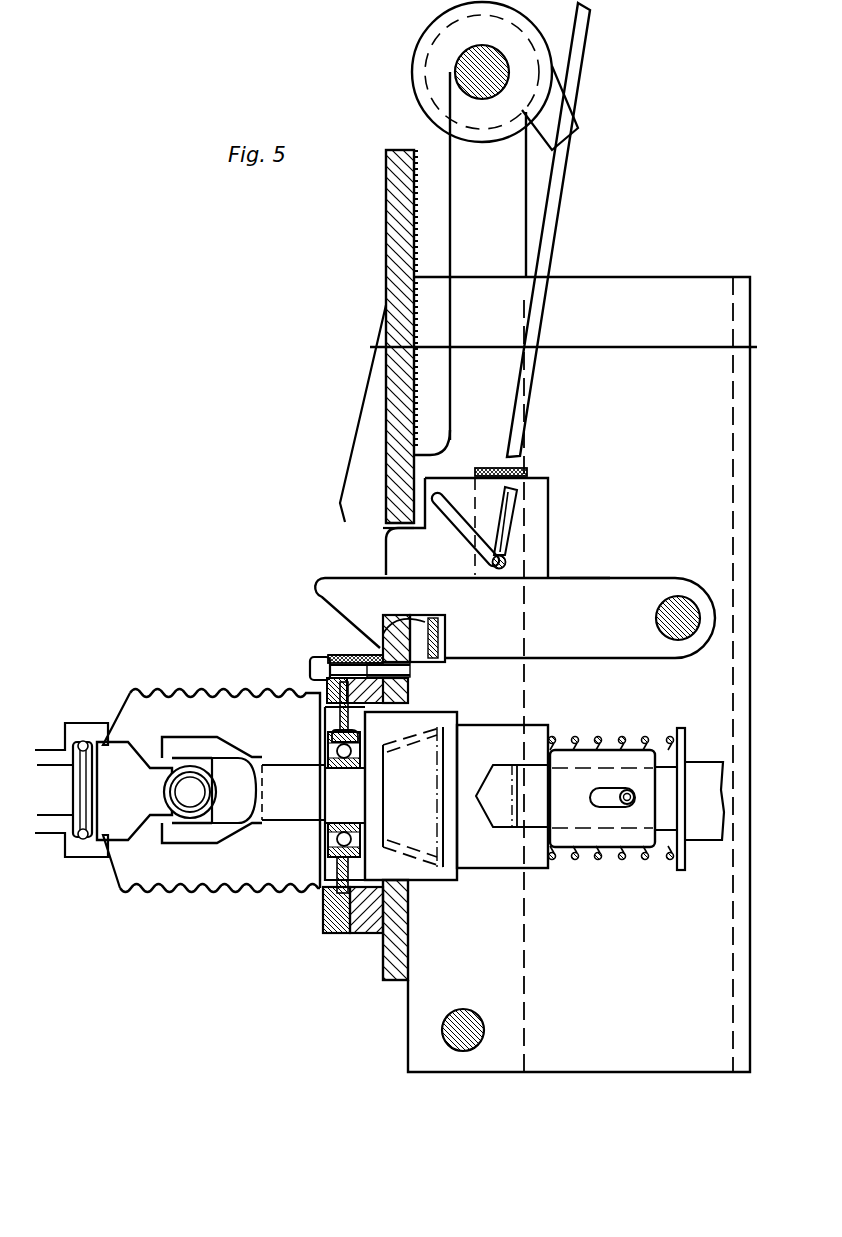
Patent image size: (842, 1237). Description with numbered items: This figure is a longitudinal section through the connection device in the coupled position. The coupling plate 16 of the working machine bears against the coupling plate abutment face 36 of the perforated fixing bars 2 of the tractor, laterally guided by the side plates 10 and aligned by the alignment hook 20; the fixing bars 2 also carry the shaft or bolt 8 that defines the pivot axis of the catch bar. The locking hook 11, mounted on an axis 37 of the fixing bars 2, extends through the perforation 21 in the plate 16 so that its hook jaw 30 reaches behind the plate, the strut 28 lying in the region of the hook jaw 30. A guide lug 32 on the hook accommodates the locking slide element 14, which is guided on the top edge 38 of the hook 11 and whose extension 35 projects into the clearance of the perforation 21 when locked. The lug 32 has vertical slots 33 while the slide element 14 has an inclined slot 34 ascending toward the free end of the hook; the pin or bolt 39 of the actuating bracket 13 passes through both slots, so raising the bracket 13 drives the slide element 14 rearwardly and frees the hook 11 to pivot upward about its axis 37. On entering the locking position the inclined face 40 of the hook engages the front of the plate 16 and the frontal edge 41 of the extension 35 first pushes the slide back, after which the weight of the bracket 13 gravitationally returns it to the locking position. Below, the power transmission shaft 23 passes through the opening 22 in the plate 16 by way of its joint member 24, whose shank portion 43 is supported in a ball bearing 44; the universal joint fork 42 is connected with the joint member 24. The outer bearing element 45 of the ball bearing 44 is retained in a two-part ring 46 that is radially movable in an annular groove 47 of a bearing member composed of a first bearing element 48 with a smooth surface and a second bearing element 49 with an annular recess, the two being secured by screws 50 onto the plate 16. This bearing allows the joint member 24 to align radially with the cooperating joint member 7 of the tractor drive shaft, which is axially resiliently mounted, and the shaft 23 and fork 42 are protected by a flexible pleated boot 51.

The perforated fixing bars 2 is at (683, 283).
The joint member 7 is at (520, 868).
The shaft or bolt 8 is at (468, 1010).
The side or guide plates 10 is at (372, 375).
The locking hook 11 is at (623, 602).
The actuating bracket 13 is at (583, 30).
The locking slide element 14 is at (540, 537).
The coupling plate 16 is at (400, 278).
The alignment hook 20 is at (430, 60).
The perforations 21 is at (383, 528).
The opening 22 is at (362, 930).
The power transmission shaft 23 is at (43, 750).
The joint member 24 is at (328, 896).
The strut 28 is at (433, 617).
The hook jaw 30 is at (365, 642).
The guide lug 32 is at (496, 467).
The vertical slots 33 is at (495, 502).
The inclined slot 34 is at (441, 510).
The extension 35 is at (402, 560).
The coupling plate abutment face 36 is at (408, 1025).
The axis 37 is at (678, 600).
The top edge 38 is at (586, 578).
The pin or bolt 39 is at (504, 556).
The inclined face 40 is at (320, 598).
The frontal edge 41 is at (386, 540).
The universal joint fork 42 is at (280, 827).
The shank portion 43 is at (325, 812).
The hub 44 is at (323, 765).
The outer bearing element 45 is at (323, 740).
The two-part ring 46 is at (320, 722).
The annular groove 47 is at (323, 697).
The first bearing element 48 is at (352, 654).
The second bearing element 49 is at (327, 655).
The screws 50 is at (312, 666).
The flexible pleated boot 51 is at (113, 882).